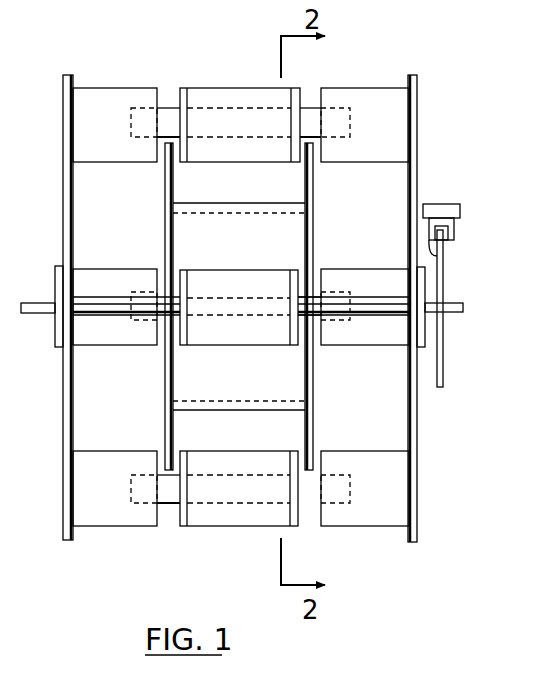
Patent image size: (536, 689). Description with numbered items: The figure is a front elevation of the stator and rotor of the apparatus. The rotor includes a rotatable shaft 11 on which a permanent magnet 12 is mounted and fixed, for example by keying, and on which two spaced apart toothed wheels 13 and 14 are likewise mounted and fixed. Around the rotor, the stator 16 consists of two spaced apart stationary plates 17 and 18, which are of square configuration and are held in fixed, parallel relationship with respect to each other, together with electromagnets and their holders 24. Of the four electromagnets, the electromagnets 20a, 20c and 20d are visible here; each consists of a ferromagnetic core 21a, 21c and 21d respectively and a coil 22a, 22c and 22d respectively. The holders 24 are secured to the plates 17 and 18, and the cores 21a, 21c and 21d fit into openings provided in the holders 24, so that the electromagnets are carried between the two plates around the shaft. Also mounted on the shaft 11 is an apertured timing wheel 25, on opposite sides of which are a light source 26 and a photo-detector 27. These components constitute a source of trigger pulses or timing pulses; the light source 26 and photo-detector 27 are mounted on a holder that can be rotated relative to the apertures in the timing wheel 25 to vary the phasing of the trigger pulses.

The rotatable shaft 11 is at (450, 308).
The permanent magnet 12 is at (300, 248).
The toothed wheel 13 is at (165, 196).
The toothed wheel 14 is at (313, 190).
The stator 16 is at (112, 76).
The stationary plate 17 is at (63, 188).
The stationary plate 18 is at (417, 128).
The electromagnet 20a is at (218, 84).
The electromagnet 20c is at (222, 528).
The electromagnet 20d is at (231, 352).
The ferromagnetic core 21a is at (312, 104).
The ferromagnetic core 21c is at (168, 487).
The ferromagnetic core 21d is at (318, 292).
The coil 22a is at (254, 95).
The coil 22c is at (200, 516).
The coil 22d is at (237, 270).
The holder 24 is at (378, 88).
The apertured timing wheel 25 is at (168, 116).
The light source 26 is at (443, 257).
The photo-detector 27 is at (454, 240).